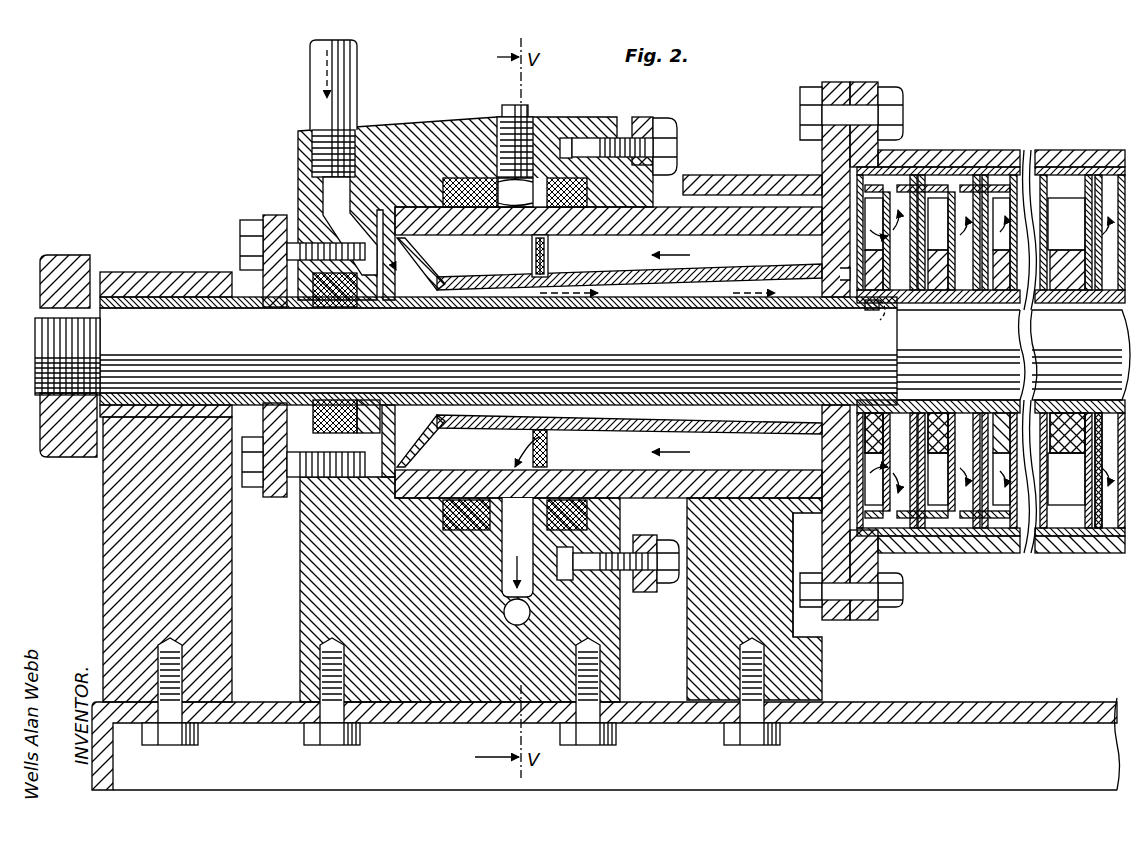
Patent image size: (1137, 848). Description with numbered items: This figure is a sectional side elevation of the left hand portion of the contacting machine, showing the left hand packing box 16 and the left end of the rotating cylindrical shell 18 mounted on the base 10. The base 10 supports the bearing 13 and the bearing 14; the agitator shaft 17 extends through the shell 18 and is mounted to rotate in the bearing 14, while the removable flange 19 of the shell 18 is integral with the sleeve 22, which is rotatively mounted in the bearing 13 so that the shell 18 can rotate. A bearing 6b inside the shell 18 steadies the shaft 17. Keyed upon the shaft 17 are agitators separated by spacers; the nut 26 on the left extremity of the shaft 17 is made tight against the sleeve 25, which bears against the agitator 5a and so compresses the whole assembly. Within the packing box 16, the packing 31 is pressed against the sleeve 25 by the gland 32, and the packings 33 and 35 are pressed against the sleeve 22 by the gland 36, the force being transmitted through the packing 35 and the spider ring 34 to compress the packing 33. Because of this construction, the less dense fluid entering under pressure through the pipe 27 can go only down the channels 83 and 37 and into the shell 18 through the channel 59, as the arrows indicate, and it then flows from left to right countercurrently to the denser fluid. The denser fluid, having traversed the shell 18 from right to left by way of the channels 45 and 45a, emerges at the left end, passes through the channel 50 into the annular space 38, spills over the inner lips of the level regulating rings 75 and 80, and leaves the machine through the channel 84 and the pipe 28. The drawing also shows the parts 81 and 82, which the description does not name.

The base 10 is at (1005, 703).
The bearing 13 is at (760, 176).
The bearing 14 is at (163, 272).
The packing box 16 is at (450, 120).
The agitator shaft 17 is at (408, 342).
The cylindrical shell 18 is at (996, 550).
The removable flange 19 is at (838, 85).
The sleeve 22 is at (668, 210).
The sleeve 25 is at (690, 308).
The nut 26 is at (74, 262).
The pipe 27 is at (310, 57).
The pipe 28 is at (517, 561).
The packing 31 is at (330, 308).
The gland 32 is at (275, 218).
The packing 33 is at (466, 500).
The spider ring 34 is at (540, 193).
The packing 35 is at (568, 500).
The gland 36 is at (652, 118).
The annular port 37 is at (648, 300).
The annular space 38 is at (736, 262).
The channel 45 is at (936, 548).
The channel 45a is at (932, 178).
The channel 50 is at (839, 464).
The channel 59 is at (850, 280).
The agitator 5a is at (874, 312).
The bearing 6b is at (1068, 553).
The level regulating ring 75 is at (533, 258).
The level regulating ring 80 is at (548, 258).
The plug 81 is at (522, 108).
The partition plate 82 is at (763, 274).
The channel 83 is at (333, 195).
The channel 84 is at (516, 448).